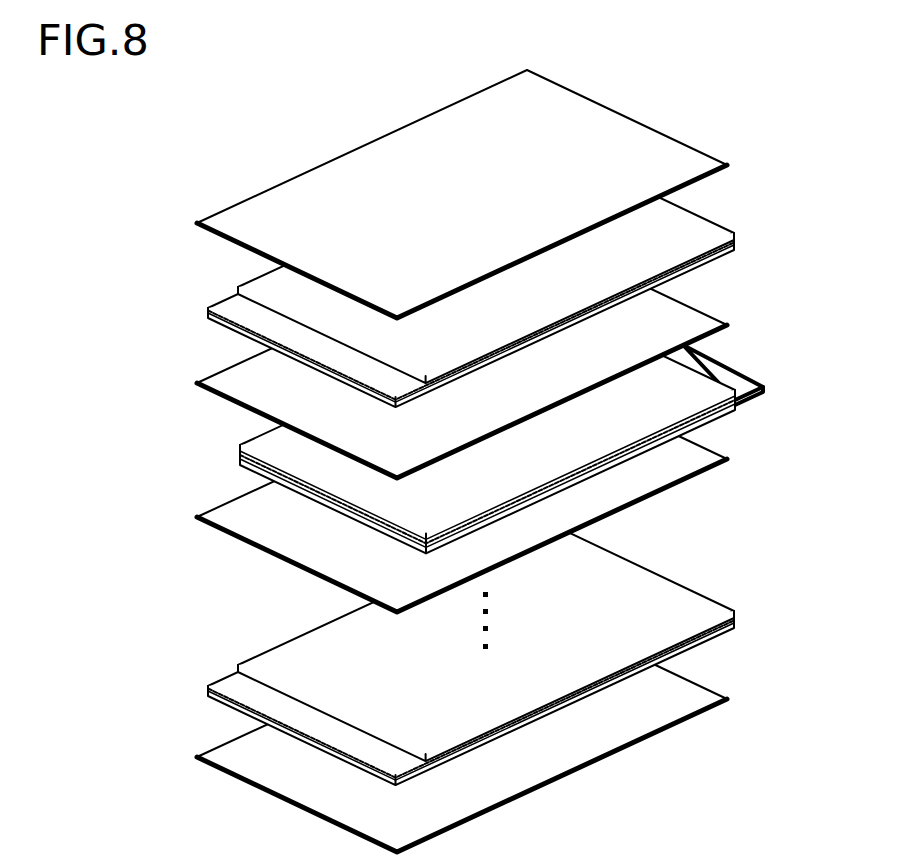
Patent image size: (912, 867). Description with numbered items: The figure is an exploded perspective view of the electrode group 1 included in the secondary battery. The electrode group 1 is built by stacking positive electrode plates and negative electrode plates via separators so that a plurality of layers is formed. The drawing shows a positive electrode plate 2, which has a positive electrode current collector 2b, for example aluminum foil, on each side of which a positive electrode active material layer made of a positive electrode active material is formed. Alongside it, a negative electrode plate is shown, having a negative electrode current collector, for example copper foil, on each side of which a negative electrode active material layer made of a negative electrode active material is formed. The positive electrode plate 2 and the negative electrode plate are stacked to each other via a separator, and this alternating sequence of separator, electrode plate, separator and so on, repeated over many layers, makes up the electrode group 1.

The electrode group 1 is at (131, 195).
The positive electrode plate 2 is at (456, 428).
The positive electrode current collector 2b is at (240, 454).